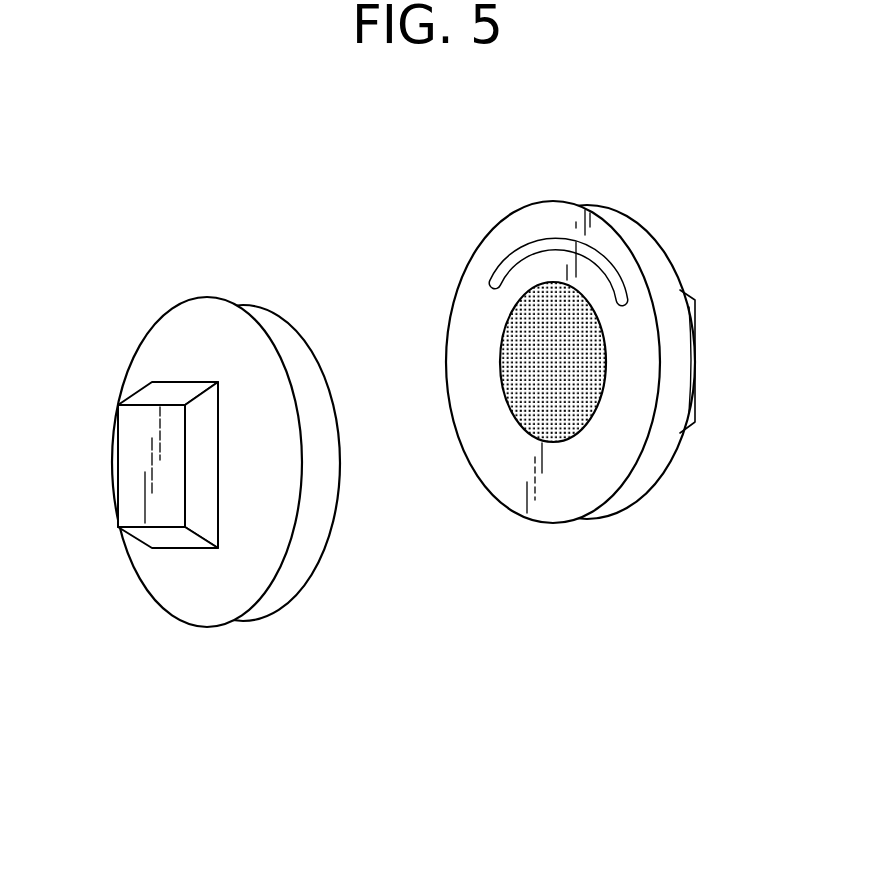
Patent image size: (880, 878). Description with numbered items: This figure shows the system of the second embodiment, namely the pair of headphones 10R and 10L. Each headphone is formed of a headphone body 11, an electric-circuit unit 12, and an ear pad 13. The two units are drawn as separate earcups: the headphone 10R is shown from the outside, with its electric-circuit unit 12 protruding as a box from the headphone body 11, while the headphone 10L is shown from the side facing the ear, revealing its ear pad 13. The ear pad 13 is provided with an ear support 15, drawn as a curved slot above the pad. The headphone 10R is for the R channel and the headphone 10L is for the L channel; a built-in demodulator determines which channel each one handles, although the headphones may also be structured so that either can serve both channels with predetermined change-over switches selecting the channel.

The headphone 10R is at (184, 400).
The headphone 10L is at (570, 317).
The headphone body 11 is at (398, 369).
The electric-circuit unit 12 is at (142, 444).
The ear pad 13 is at (488, 397).
The ear support 15 is at (521, 253).